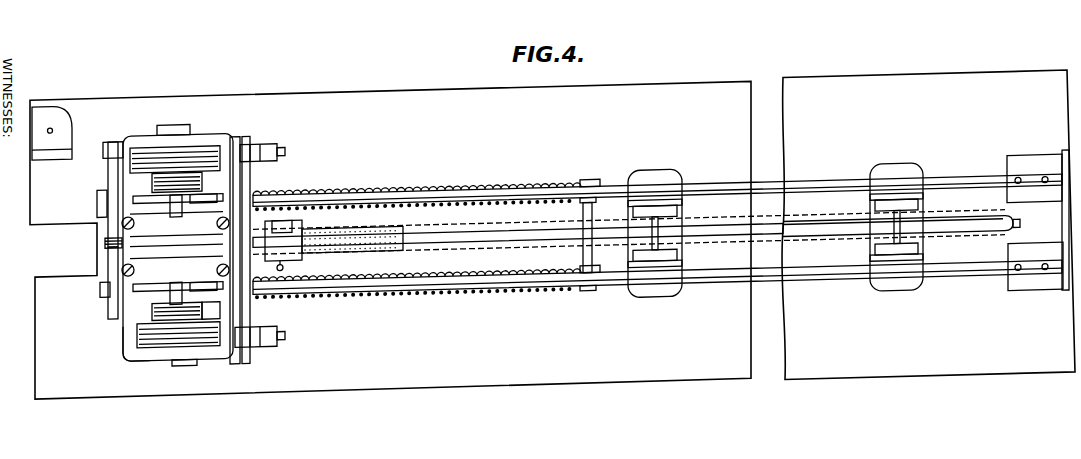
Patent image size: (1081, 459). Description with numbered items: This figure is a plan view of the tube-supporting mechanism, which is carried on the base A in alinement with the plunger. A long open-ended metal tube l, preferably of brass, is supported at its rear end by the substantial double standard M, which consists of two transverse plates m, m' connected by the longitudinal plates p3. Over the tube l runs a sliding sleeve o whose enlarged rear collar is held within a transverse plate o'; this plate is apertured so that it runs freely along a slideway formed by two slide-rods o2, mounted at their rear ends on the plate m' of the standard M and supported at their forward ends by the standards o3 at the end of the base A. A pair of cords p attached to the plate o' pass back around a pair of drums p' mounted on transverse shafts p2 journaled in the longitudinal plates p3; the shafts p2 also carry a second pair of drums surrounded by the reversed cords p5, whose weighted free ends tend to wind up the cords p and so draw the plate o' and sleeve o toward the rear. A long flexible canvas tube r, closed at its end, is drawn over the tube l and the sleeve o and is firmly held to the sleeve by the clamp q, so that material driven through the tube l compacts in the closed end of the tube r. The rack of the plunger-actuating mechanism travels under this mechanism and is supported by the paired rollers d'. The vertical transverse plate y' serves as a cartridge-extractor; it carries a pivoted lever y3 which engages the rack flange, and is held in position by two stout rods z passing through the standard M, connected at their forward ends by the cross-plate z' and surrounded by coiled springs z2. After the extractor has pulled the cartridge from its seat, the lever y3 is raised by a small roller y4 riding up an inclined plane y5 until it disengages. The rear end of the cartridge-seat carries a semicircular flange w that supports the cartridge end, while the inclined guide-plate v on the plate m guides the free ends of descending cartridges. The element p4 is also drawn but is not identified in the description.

The base A is at (552, 234).
The double standard M is at (148, 141).
The inclined plane y5 is at (50, 162).
The small roller y4 is at (108, 145).
The pivoted lever y3 is at (108, 174).
The vertical transverse plate y' is at (93, 272).
The semicircular flange w is at (105, 253).
The inclined guide-plate v is at (110, 292).
The transverse plate m is at (125, 342).
The transverse plate m' is at (187, 181).
The cord p is at (264, 241).
The drum p' is at (175, 238).
The transverse shaft p2 is at (176, 226).
The longitudinal plate p3 is at (218, 142).
The block p4 is at (213, 306).
The reversed cord p5 is at (167, 245).
The sliding sleeve o is at (244, 249).
The transverse plate o' is at (255, 250).
The slide-rod o2 is at (770, 300).
The standard o3 is at (1062, 231).
The forwardly-projecting rod z is at (160, 243).
The cross-plate z' is at (574, 236).
The coiled spring z2 is at (548, 197).
The clamp q is at (302, 241).
The flexible tube r is at (968, 237).
The tube l is at (466, 243).
The rollers d' is at (775, 230).